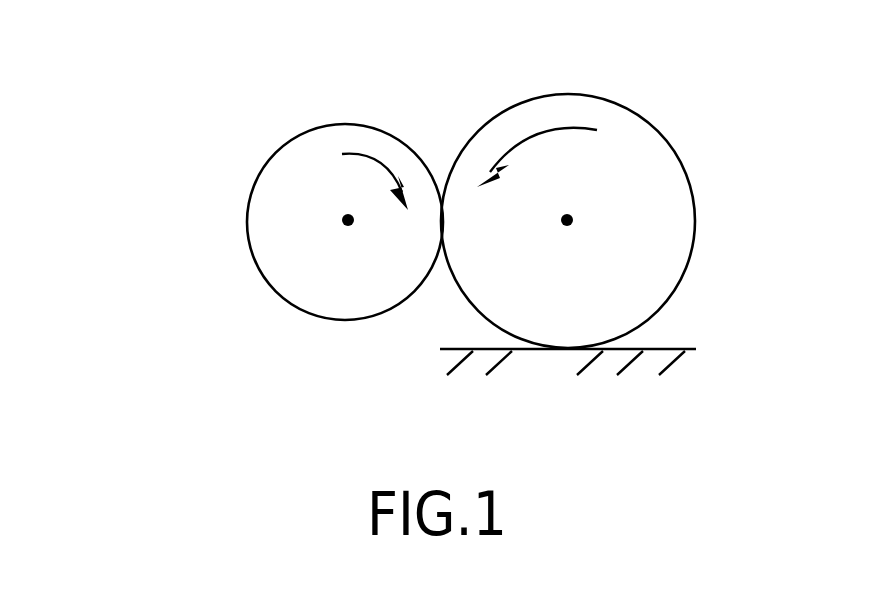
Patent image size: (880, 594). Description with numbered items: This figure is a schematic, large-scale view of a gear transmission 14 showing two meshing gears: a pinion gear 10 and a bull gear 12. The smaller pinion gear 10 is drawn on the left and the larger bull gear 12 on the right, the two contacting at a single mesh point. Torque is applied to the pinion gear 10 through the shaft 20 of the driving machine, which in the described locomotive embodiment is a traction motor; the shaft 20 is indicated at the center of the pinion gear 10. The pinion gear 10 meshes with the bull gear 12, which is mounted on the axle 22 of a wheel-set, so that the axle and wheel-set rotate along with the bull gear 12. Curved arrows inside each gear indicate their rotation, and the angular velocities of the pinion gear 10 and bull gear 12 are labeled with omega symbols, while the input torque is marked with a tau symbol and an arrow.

The pinion gear 10 is at (378, 127).
The bull gear 12 is at (680, 160).
The gear transmission 14 is at (152, 203).
The shaft 20 is at (348, 220).
The axle 22 is at (575, 222).